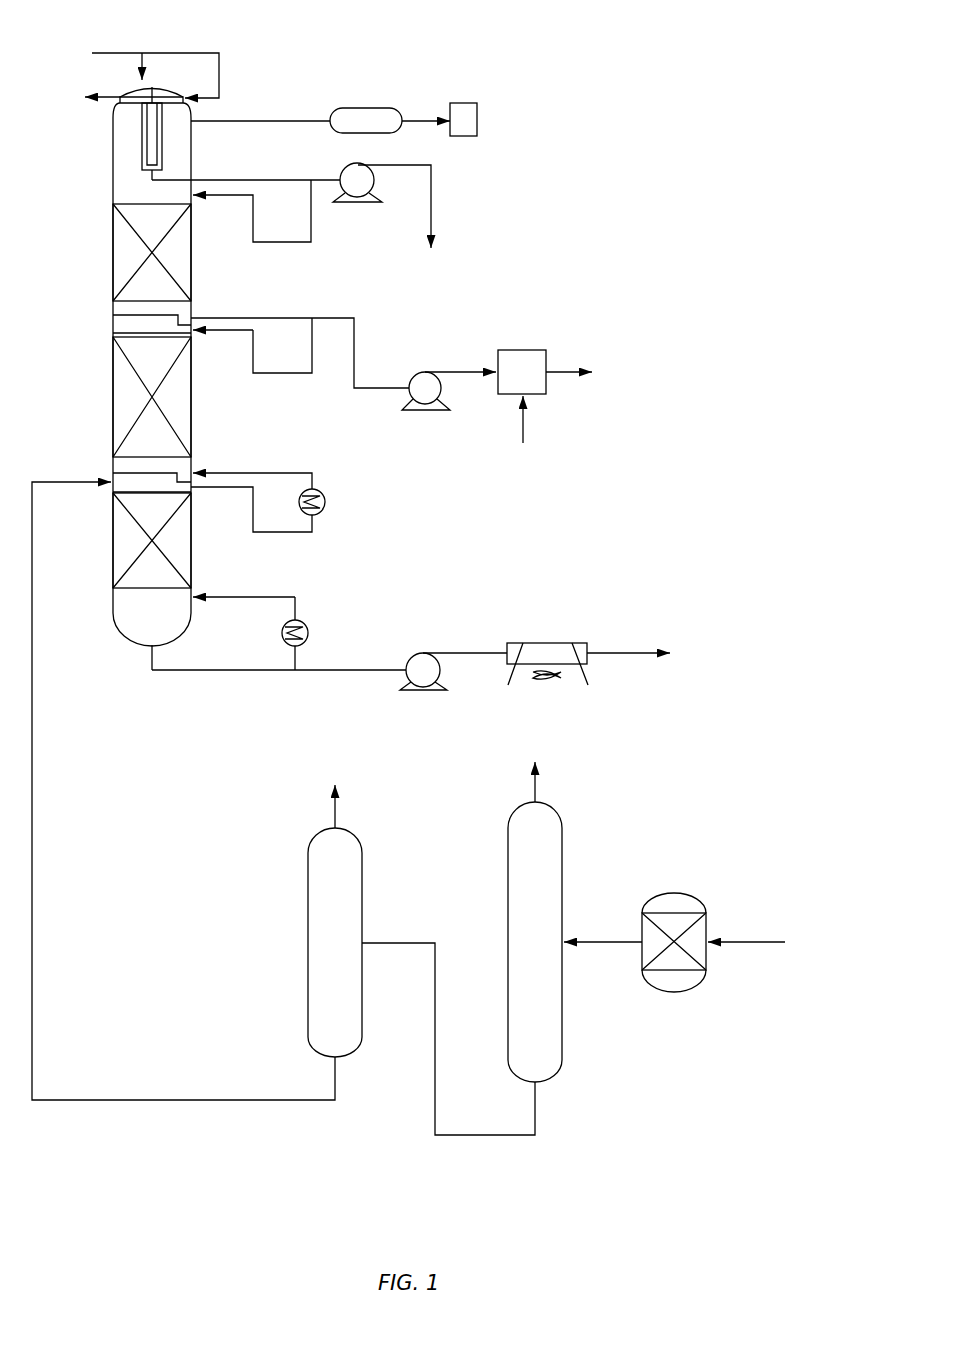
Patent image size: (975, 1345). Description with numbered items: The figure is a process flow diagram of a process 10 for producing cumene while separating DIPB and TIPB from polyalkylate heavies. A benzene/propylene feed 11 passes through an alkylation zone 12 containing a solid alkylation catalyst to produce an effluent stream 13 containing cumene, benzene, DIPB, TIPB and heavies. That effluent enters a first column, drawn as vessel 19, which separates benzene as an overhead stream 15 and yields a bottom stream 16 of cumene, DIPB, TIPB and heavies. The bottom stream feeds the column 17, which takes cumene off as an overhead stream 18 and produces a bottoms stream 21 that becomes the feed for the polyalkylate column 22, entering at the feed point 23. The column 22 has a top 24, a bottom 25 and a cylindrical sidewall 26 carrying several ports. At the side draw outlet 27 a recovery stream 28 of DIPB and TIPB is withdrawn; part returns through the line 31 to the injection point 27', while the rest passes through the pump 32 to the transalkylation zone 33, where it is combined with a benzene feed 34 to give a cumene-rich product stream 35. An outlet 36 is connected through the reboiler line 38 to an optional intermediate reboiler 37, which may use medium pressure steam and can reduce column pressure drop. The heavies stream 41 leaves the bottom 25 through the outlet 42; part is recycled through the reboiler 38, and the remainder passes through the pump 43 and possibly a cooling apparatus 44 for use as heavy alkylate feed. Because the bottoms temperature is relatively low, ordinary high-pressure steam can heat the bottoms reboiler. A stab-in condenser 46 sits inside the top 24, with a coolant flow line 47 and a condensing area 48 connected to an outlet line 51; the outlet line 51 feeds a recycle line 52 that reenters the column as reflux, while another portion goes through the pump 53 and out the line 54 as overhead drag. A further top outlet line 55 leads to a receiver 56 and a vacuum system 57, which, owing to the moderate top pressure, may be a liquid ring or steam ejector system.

The process 10 is at (603, 56).
The benzene/propylene feed 11 is at (765, 942).
The alkylation zone 12 is at (700, 913).
The effluent stream 13 is at (607, 942).
The overhead stream 15 is at (535, 794).
The bottom stream 16 is at (527, 1135).
The column 17 is at (362, 874).
The overhead stream 18 is at (335, 816).
The first separator 19 is at (562, 830).
The bottoms stream 21 is at (162, 1100).
The polyalkylate column 22 is at (100, 163).
The feed point 23 is at (113, 478).
The top 24 is at (193, 114).
The bottom 25 is at (115, 622).
The cylindrical sidewall 26 is at (113, 365).
The side draw outlet 27 is at (176, 312).
The injection point 27' is at (223, 345).
The recovery stream 28 is at (354, 338).
The line 31 is at (285, 373).
The pump 32 is at (427, 372).
The transalkylation zone 33 is at (540, 350).
The benzene feed 34 is at (523, 425).
The product stream 35 is at (575, 372).
The outlet 36 is at (193, 490).
The intermediate reboiler 37 is at (322, 490).
The reboiler line 38 is at (253, 525).
The heavies stream 41 is at (152, 670).
The outlet 42 is at (175, 636).
The pump 43 is at (426, 653).
The cooling apparatus 44 is at (580, 643).
The stab-in condenser 46 is at (143, 53).
The coolant flow line 47 is at (200, 53).
The condensing area 48 is at (162, 150).
The outlet line 51 is at (268, 180).
The recycle line 52 is at (311, 228).
The pump 53 is at (358, 165).
The line 54 is at (431, 190).
The top outlet line 55 is at (300, 120).
The receiver 56 is at (390, 108).
The vacuum system 57 is at (468, 103).